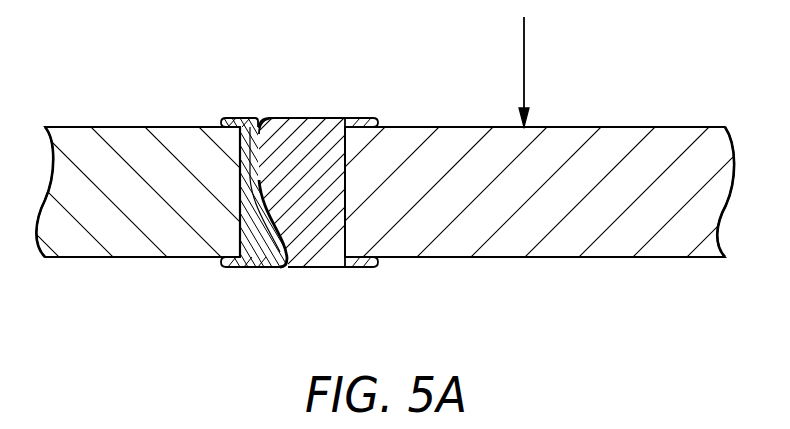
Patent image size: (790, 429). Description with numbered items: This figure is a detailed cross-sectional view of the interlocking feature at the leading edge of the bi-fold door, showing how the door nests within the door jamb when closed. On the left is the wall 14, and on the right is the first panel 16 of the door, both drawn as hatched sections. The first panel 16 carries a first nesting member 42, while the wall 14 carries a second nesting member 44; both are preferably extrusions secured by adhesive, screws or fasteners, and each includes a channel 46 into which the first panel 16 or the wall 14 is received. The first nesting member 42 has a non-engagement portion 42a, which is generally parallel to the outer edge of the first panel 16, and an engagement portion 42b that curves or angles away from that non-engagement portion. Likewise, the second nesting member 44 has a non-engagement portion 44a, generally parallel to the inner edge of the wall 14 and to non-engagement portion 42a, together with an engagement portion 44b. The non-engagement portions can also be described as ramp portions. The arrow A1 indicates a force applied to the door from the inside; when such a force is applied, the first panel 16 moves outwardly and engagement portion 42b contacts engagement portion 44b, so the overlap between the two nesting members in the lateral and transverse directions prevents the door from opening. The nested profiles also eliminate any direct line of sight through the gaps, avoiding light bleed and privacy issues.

The wall 14 is at (72, 246).
The first panel 16 is at (614, 244).
The first nesting member 42 is at (323, 136).
The non-engagement portion 42a is at (285, 129).
The engagement portion 42b is at (282, 221).
The second nesting member 44 is at (250, 258).
The non-engagement portion 44a is at (272, 155).
The engagement portion 44b is at (287, 250).
The channel 46 is at (347, 152).
The arrow A1 is at (524, 62).